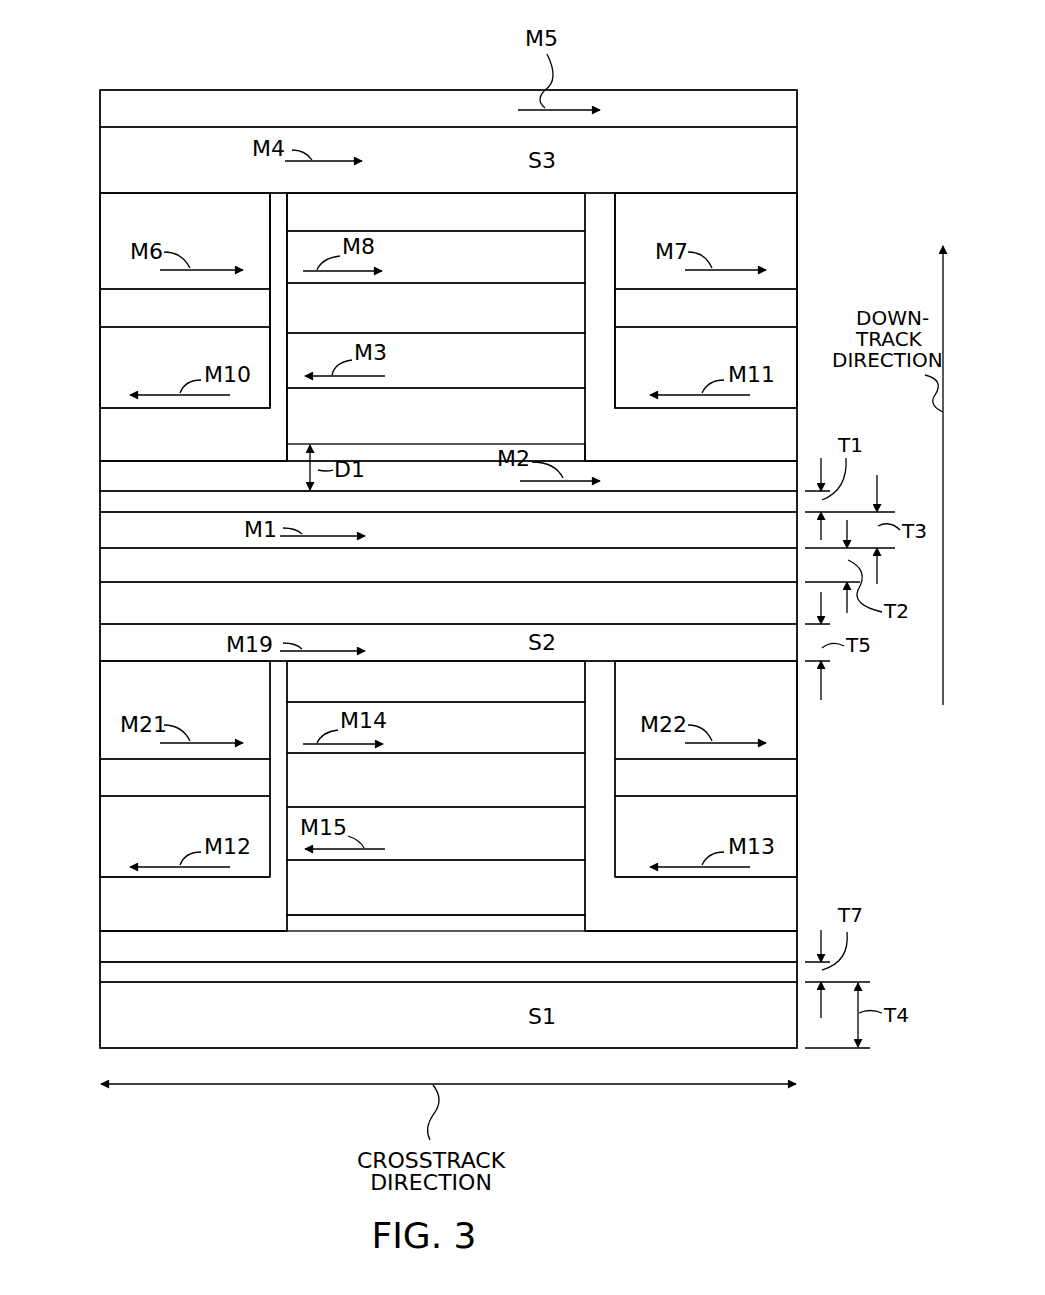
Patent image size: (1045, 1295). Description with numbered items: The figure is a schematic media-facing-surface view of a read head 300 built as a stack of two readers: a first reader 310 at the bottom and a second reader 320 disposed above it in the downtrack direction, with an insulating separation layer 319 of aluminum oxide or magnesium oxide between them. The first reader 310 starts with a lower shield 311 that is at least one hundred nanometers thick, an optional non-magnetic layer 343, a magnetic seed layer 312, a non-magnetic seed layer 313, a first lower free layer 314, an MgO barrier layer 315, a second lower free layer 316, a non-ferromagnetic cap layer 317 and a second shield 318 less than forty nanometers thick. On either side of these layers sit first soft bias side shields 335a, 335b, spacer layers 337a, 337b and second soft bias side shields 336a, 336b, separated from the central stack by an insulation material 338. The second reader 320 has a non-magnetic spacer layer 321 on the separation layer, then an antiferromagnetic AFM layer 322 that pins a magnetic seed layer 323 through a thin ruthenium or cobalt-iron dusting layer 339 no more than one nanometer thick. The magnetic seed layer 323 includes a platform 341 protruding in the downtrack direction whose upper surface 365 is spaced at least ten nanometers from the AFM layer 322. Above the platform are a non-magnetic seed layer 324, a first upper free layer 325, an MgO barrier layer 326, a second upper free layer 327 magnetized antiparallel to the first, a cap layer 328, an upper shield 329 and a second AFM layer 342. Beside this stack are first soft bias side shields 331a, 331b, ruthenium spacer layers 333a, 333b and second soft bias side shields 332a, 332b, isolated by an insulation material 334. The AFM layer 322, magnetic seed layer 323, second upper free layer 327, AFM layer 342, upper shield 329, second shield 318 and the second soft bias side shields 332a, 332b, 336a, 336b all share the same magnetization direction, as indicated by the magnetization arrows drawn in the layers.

The read head 300 is at (148, 60).
The first reader 310 is at (80, 718).
The second reader 320 is at (80, 247).
The lower shield 311 is at (470, 1029).
The magnetic seed layer 312 is at (568, 953).
The non-magnetic seed layer 313 is at (534, 897).
The first lower free layer 314 is at (534, 847).
The barrier layer 315 is at (534, 795).
The second lower free layer 316 is at (534, 742).
The cap layer 317 is at (534, 695).
The second shield 318 is at (470, 655).
The insulating separation layer 319 is at (470, 612).
The non-magnetic spacer layer 321 is at (470, 577).
The AFM layer 322 is at (470, 545).
The magnetic seed layer 323 is at (470, 478).
The non-magnetic seed layer 324 is at (534, 425).
The first upper free layer 325 is at (534, 375).
The barrier layer 326 is at (534, 323).
The second upper free layer 327 is at (534, 271).
The cap layer 328 is at (534, 225).
The upper shield 329 is at (470, 173).
The first soft bias side shield 331a is at (208, 355).
The first soft bias side shield 331b is at (728, 355).
The second soft bias side shield 332a is at (208, 231).
The second soft bias side shield 332b is at (728, 231).
The spacer layer 333a is at (208, 318).
The spacer layer 333b is at (728, 318).
The insulation material 334 is at (200, 445).
The first soft bias side shield 335a is at (208, 826).
The first soft bias side shield 335b is at (728, 826).
The second soft bias side shield 336a is at (208, 702).
The second soft bias side shield 336b is at (728, 702).
The spacer layer 337a is at (208, 788).
The spacer layer 337b is at (728, 788).
The insulation material 338 is at (200, 915).
The dusting layer 339 is at (118, 502).
The platform 341 is at (573, 448).
The AFM layer 342 is at (470, 121).
The non-magnetic layer 343 is at (118, 972).
The upper surface 365 is at (297, 447).